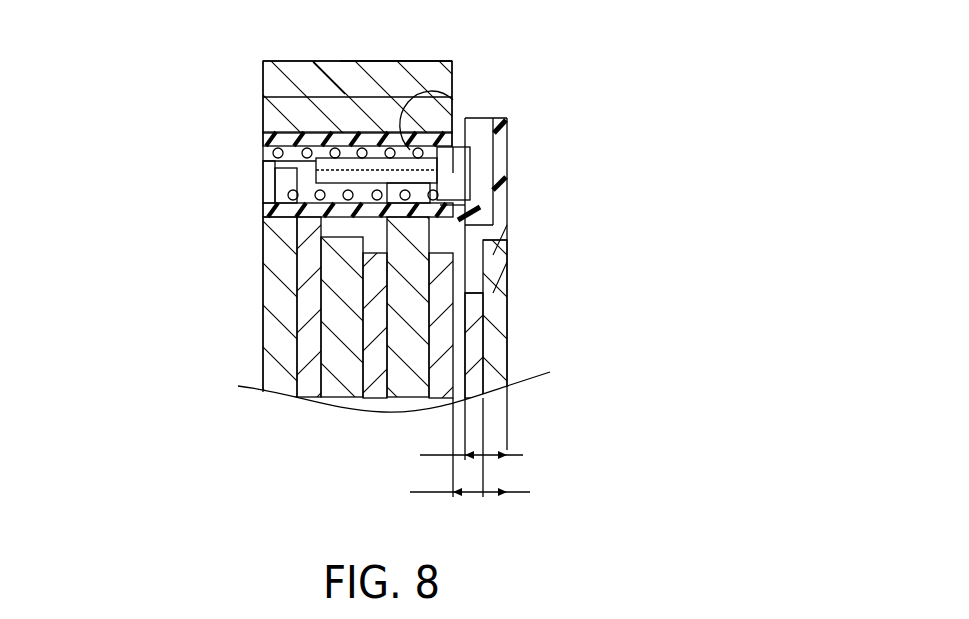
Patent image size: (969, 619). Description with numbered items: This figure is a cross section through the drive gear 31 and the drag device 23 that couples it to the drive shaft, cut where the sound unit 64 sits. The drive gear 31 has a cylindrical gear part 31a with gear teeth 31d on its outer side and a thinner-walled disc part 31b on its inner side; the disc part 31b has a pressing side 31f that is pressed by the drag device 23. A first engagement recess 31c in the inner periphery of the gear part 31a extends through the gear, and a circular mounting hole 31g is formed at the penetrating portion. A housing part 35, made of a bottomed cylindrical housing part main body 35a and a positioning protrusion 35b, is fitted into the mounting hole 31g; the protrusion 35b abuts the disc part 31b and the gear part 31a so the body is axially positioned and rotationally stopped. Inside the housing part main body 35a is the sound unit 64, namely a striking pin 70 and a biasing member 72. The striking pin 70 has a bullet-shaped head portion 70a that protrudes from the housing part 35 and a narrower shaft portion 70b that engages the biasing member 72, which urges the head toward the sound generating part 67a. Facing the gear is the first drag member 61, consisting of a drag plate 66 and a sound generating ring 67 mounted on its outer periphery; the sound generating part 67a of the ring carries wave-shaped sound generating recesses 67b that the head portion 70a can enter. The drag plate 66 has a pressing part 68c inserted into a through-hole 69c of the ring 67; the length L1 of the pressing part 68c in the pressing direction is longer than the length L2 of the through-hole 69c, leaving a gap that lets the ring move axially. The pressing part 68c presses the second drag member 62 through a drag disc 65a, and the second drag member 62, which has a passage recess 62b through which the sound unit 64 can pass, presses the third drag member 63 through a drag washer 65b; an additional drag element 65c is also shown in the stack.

The drag device 23 is at (525, 382).
The drive gear 31 is at (247, 103).
The gear part 31a is at (262, 81).
The disc part 31b is at (262, 290).
The first engagement recess 31c is at (423, 62).
The gear teeth 31d is at (375, 61).
The pressing side 31f is at (312, 397).
The mounting hole 31g is at (263, 204).
The housing part 35 is at (454, 93).
The housing part main body 35a is at (300, 97).
The positioning protrusion 35b is at (263, 222).
The first drag member 61 is at (527, 258).
The second drag member 62 is at (403, 420).
The passage recess 62b is at (507, 221).
The third drag member 63 is at (345, 395).
The sound unit 64 is at (106, 110).
The drag disc 65a is at (440, 410).
The drag washer 65b is at (330, 322).
The third electrode portion 65c is at (335, 345).
The drag plate 66 is at (512, 328).
The sound generating ring 67 is at (512, 167).
The sound generating part 67a is at (454, 102).
The sound generating recess 67b is at (507, 204).
The pressing part 68c is at (507, 281).
The through-hole 69c is at (507, 347).
The striking pin 70 is at (262, 175).
The head portion 70a is at (470, 147).
The shaft portion 70b is at (357, 108).
The biasing member 72 is at (262, 150).
The length of the pressing part L1 is at (470, 477).
The length of the through-hole L2 is at (473, 439).